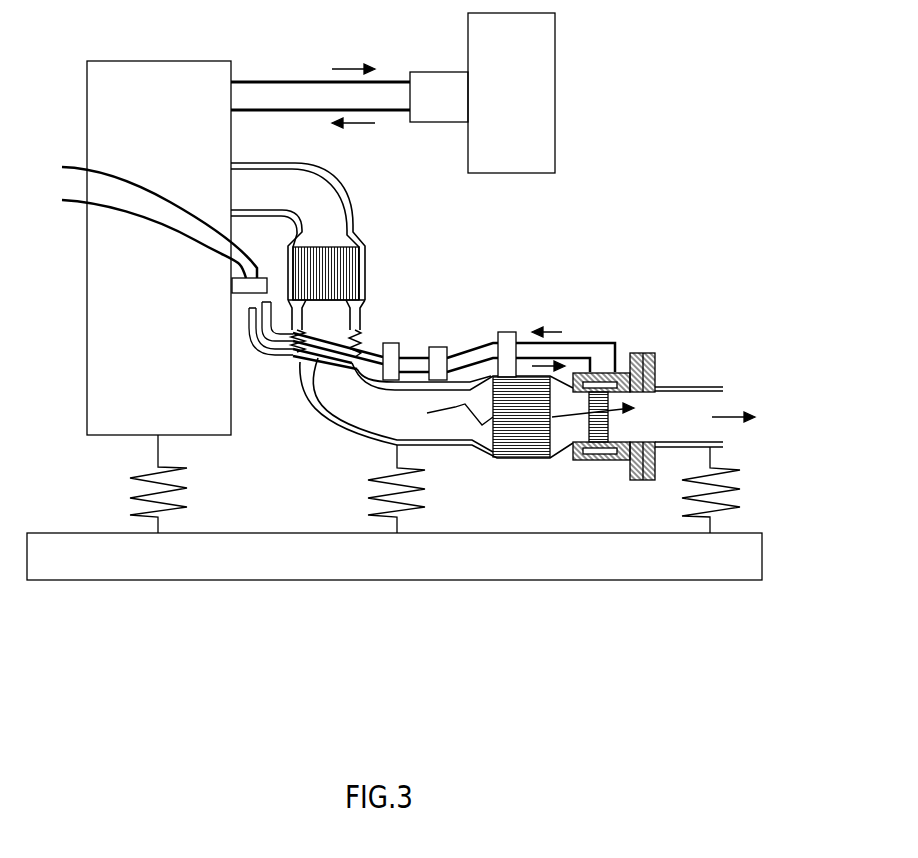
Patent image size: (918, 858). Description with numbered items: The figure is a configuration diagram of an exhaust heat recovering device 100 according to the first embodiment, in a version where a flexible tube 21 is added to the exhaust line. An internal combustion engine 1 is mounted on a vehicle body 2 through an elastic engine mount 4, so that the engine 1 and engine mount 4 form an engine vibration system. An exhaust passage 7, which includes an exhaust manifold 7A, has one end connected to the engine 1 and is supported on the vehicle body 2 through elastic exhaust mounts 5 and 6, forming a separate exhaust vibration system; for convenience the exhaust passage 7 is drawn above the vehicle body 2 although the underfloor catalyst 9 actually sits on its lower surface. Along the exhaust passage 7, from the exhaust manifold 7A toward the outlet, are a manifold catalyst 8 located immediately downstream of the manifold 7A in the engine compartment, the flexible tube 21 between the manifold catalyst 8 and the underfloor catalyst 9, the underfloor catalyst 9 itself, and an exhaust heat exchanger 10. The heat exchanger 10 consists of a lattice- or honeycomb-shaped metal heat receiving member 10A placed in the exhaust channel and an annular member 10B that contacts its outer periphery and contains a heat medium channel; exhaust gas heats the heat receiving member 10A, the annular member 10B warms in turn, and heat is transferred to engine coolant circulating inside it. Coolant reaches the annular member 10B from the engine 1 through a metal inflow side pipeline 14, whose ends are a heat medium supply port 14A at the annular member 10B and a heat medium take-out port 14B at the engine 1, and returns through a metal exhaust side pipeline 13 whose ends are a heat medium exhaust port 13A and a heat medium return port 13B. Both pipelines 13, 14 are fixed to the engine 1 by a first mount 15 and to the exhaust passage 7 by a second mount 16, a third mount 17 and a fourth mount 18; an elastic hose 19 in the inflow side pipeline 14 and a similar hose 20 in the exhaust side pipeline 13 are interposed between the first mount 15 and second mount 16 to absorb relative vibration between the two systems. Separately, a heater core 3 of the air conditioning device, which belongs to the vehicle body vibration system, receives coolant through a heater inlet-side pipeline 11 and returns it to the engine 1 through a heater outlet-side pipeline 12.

The internal combustion engine 1 is at (112, 77).
The vehicle body 2 is at (553, 37).
The heater core 3 is at (439, 72).
The engine mount 4 is at (157, 453).
The exhaust mount 5 is at (392, 457).
The exhaust mount 6 is at (712, 461).
The exhaust passage 7 is at (332, 430).
The exhaust manifold 7A is at (340, 197).
The manifold catalyst 8 is at (367, 255).
The underfloor catalyst 9 is at (523, 460).
The exhaust heat exchanger 10 is at (618, 478).
The heat receiving member 10A is at (613, 427).
The annular member 10B is at (573, 461).
The heater inlet-side pipeline 11 is at (290, 80).
The heater outlet-side pipeline 12 is at (308, 113).
The exhaust side pipeline 13 is at (572, 343).
The heat medium exhaust port 13A is at (618, 372).
The heat medium return port 13B is at (138, 217).
The inflow side pipeline 14 is at (312, 372).
The heat medium supply port 14A is at (592, 372).
The heat medium take-out port 14B is at (133, 233).
The first mount 15 is at (239, 293).
The second mount 16 is at (393, 343).
The third mount 17 is at (443, 347).
The fourth mount 18 is at (507, 332).
The hose 19 is at (263, 347).
The hose 20 is at (270, 318).
The flexible tube 21 is at (360, 342).
The exhaust heat recovering device 100 is at (601, 325).